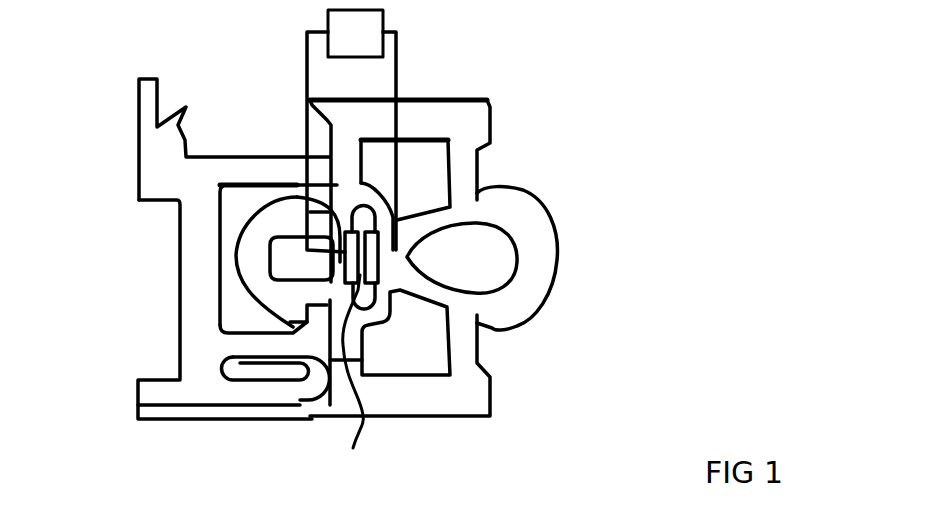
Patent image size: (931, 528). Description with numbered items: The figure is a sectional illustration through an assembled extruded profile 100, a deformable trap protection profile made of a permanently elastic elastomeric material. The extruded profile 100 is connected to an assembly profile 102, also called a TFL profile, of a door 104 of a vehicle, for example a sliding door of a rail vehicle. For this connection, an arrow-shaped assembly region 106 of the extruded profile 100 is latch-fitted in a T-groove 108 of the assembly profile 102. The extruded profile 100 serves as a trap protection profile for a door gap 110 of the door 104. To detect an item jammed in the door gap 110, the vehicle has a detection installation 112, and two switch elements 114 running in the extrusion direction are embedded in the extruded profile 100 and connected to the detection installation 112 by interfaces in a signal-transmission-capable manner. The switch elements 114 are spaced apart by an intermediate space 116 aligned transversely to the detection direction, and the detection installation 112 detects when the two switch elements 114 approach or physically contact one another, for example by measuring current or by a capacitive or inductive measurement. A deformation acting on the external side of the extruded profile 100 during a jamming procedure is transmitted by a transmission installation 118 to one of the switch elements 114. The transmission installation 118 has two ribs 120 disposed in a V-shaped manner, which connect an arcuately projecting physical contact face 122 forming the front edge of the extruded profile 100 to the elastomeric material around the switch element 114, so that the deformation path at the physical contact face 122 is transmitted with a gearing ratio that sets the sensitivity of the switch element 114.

The extruded profile 100 is at (487, 100).
The assembly profile 102 is at (140, 137).
The door 104 is at (150, 420).
The assembly region 106 is at (245, 258).
The T-groove 108 is at (223, 298).
The door gap 110 is at (713, 176).
The detection installation 112 is at (351, 131).
The switch elements 114 is at (320, 232).
The intermediate space 116 is at (345, 379).
The transmission installation 118 is at (568, 187).
The ribs 120 is at (482, 205).
The physical contact face 122 is at (560, 257).